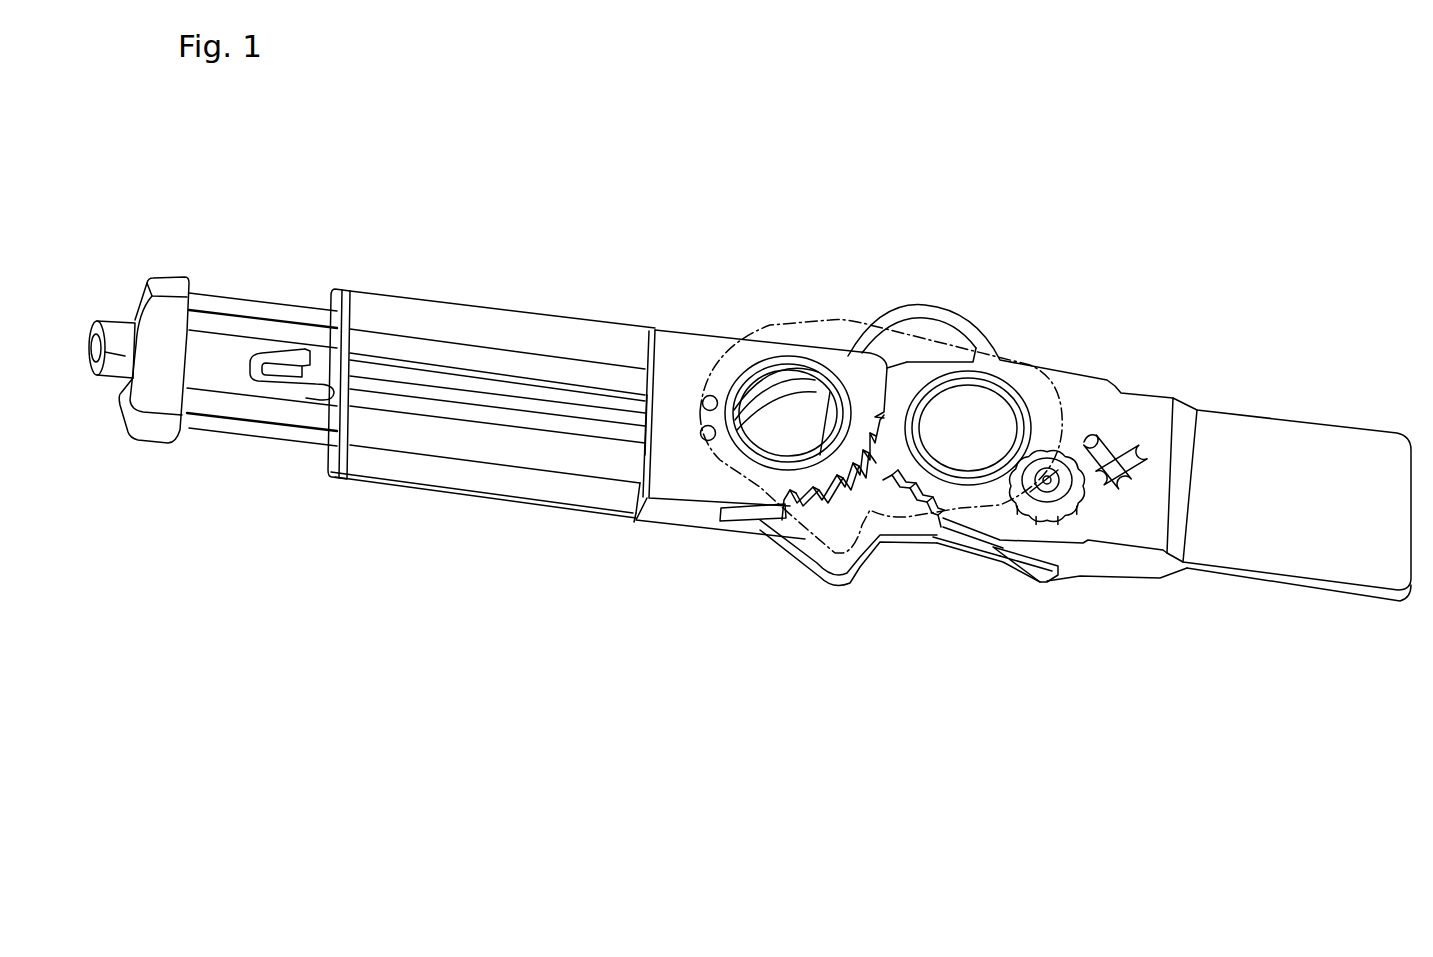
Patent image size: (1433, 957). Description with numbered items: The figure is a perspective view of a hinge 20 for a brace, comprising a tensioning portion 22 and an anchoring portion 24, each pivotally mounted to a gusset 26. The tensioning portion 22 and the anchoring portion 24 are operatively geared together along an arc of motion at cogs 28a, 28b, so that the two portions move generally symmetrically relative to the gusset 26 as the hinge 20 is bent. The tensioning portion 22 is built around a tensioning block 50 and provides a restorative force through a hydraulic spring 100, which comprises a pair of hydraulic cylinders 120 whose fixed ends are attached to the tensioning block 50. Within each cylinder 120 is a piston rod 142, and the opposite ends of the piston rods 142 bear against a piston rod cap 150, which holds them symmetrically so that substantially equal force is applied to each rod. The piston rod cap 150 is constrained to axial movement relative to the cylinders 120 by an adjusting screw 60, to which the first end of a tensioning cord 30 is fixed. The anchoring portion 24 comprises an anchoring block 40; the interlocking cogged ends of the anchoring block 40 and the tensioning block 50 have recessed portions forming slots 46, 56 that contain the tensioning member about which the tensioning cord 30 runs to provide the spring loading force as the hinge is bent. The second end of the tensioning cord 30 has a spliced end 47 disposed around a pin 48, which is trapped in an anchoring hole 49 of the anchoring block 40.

The hinge 20 is at (564, 242).
The tensioning portion 22 is at (536, 313).
The anchoring portion 24 is at (1119, 381).
The gusset 26 is at (855, 325).
The cog 28a is at (917, 527).
The cog 28b is at (821, 520).
The tensioning cord 30 is at (610, 412).
The anchoring block 40 is at (1227, 548).
The slot 46 is at (962, 545).
The spliced end 47 is at (1100, 438).
The pin 48 is at (1150, 447).
The anchoring hole 49 is at (1140, 483).
The tensioning block 50 is at (683, 480).
The slot 56 is at (744, 520).
The adjusting screw 60 is at (207, 372).
The hydraulic spring 100 is at (462, 514).
The hydraulic cylinder 120 is at (438, 437).
The piston rod 142 is at (217, 422).
The piston rod cap 150 is at (158, 280).